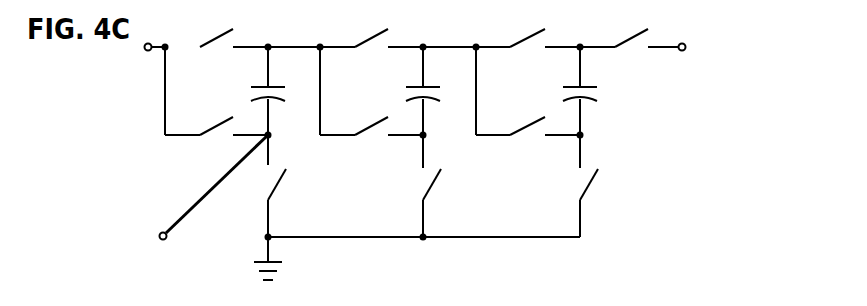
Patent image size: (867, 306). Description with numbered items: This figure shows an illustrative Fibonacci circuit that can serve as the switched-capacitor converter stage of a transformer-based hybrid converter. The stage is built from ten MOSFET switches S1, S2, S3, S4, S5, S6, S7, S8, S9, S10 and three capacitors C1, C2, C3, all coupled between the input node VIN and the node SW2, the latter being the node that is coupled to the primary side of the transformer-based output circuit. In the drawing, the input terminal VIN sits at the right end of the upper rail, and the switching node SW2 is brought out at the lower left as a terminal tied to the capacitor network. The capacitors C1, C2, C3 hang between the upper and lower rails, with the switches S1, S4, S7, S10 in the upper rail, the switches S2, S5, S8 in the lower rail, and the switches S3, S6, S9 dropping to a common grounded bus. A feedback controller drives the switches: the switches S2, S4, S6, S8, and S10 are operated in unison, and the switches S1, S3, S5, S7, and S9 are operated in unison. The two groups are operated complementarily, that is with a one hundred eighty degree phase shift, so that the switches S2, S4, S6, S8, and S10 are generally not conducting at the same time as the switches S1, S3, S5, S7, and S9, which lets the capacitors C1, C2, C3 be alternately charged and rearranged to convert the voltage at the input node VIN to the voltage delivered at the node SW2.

The switch S1 is at (211, 54).
The switch S2 is at (213, 141).
The switch S3 is at (259, 188).
The switch S4 is at (370, 54).
The switch S5 is at (370, 141).
The switch S6 is at (415, 188).
The switch S7 is at (527, 54).
The switch S8 is at (527, 141).
The switch S9 is at (571, 188).
The switch S10 is at (630, 54).
The capacitor C1 is at (251, 97).
The capacitor C2 is at (406, 97).
The capacitor C3 is at (563, 97).
The node V_ SW2 is at (214, 198).
The input node V_IN VIN is at (717, 53).